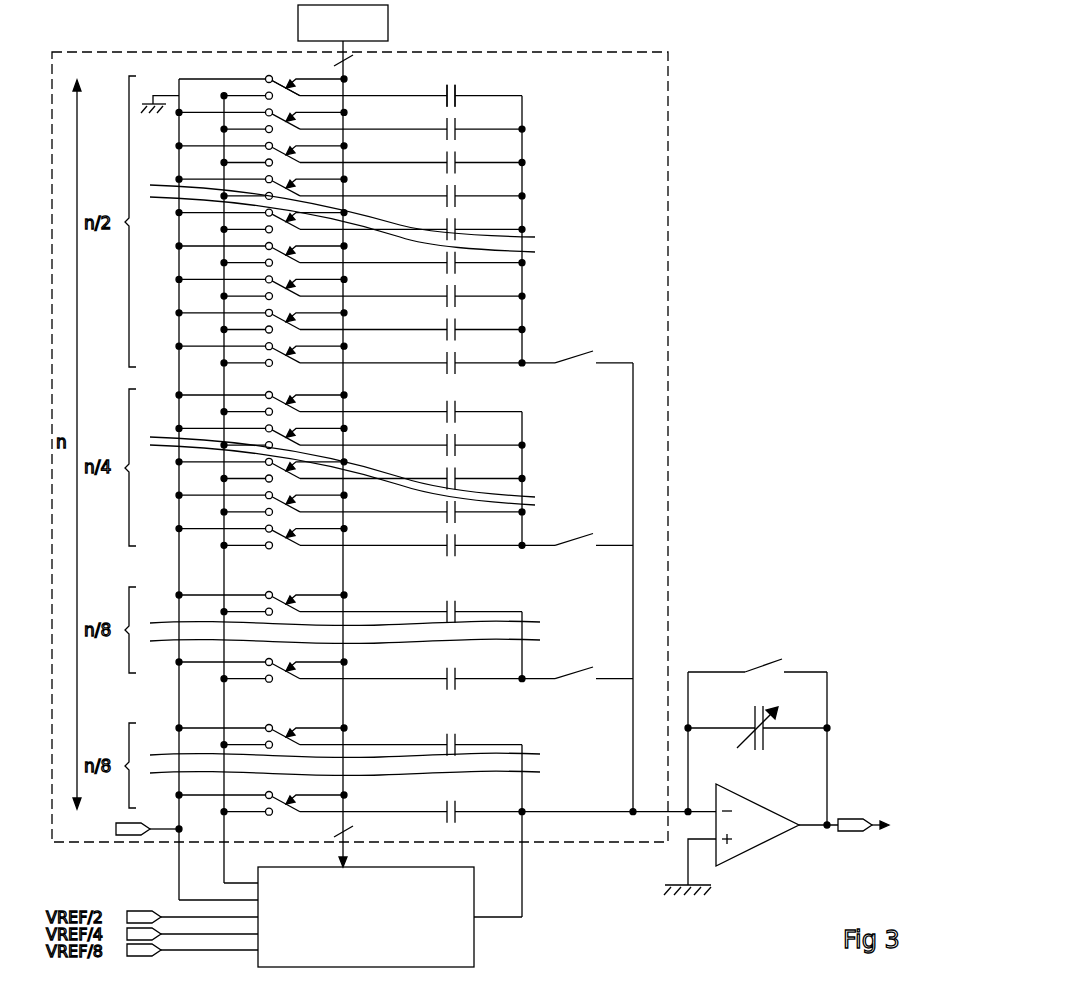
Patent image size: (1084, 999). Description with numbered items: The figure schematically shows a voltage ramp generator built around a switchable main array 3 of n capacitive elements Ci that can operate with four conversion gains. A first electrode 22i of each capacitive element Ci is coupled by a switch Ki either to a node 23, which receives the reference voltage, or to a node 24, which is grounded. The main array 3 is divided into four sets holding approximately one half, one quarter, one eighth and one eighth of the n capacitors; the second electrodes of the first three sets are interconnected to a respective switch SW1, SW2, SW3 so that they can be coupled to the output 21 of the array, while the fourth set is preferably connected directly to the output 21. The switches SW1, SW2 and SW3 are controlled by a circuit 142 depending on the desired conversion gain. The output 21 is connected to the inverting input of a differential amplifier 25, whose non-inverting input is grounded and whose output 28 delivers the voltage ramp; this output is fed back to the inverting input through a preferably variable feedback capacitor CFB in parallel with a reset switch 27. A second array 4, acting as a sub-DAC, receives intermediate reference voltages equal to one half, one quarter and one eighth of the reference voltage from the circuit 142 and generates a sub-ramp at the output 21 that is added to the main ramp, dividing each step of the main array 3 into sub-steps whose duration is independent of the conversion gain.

The switchable array 3 is at (668, 176).
The second array 4 is at (476, 945).
The output 21 is at (641, 809).
The first electrode 22i is at (385, 95).
The node 23 is at (179, 833).
The node 24 is at (165, 93).
The differential amplifier 25 is at (757, 846).
The reset switch 27 is at (772, 660).
The output 28 is at (830, 822).
The circuit 142 is at (388, 21).
The switch Ki is at (284, 80).
The capacitive element Ci is at (458, 84).
The feedback capacitor CFB is at (757, 744).
The switch SW1 is at (583, 364).
The switch SW2 is at (583, 547).
The switch SW3 is at (583, 680).